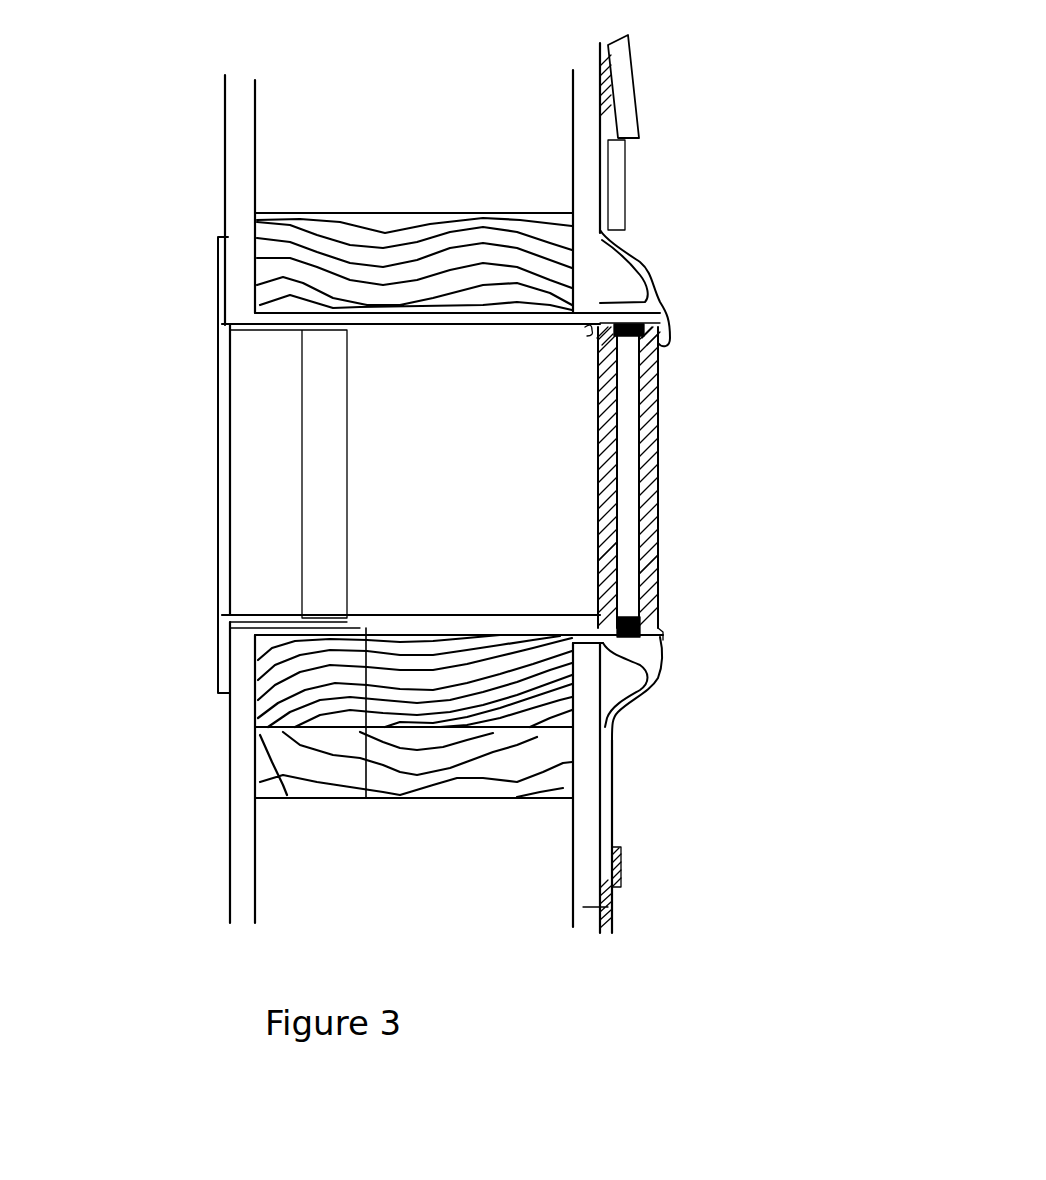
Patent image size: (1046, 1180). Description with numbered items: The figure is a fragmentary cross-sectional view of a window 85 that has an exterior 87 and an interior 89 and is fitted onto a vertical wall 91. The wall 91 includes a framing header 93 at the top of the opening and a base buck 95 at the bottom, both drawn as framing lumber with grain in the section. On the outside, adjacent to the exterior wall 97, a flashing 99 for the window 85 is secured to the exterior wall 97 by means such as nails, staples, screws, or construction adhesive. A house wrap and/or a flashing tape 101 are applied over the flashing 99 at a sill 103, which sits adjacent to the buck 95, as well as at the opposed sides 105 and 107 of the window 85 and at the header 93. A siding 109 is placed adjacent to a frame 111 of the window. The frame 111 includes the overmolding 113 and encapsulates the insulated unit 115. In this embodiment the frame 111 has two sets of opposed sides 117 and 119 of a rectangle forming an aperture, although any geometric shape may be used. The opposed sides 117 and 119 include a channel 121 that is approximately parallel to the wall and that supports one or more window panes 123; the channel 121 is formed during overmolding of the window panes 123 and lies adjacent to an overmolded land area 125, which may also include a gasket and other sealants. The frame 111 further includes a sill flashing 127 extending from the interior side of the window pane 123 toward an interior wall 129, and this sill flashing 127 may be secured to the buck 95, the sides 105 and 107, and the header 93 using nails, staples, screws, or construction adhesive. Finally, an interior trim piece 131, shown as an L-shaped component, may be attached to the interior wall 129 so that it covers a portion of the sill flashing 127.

The window 85 is at (660, 490).
The exterior 87 is at (656, 156).
The interior 89 is at (206, 162).
The vertical wall 91 is at (410, 903).
The framing header 93 is at (426, 238).
The base buck 95 is at (414, 763).
The exterior wall 97 is at (605, 905).
The flashing 99 is at (618, 812).
The flashing tape 101 is at (629, 856).
The sill 103 is at (489, 692).
The opposed side 105 is at (318, 362).
The opposed side 107 is at (436, 394).
The siding 109 is at (625, 97).
The frame 111 is at (647, 297).
The overmolding 113 is at (672, 330).
The insulated unit 115 is at (655, 410).
The opposed side of frame 117 is at (640, 653).
The opposed side of frame 119 is at (650, 313).
The channel 121 is at (663, 618).
The window pane 123 is at (648, 572).
The overmolded land area 125 is at (657, 630).
The sill flashing 127 is at (366, 798).
The interior wall 129 is at (248, 731).
The interior trim piece 131 is at (212, 654).